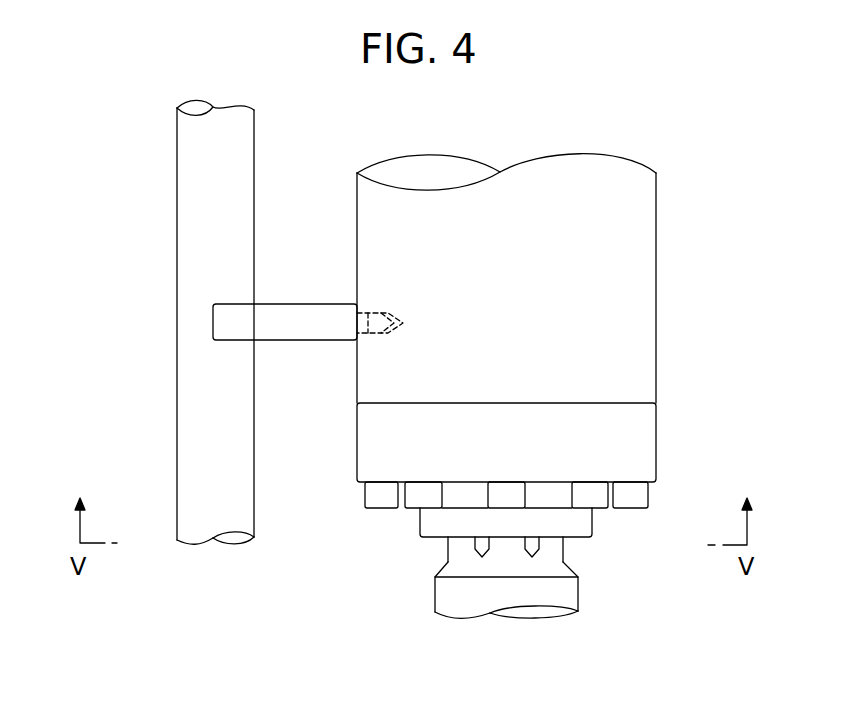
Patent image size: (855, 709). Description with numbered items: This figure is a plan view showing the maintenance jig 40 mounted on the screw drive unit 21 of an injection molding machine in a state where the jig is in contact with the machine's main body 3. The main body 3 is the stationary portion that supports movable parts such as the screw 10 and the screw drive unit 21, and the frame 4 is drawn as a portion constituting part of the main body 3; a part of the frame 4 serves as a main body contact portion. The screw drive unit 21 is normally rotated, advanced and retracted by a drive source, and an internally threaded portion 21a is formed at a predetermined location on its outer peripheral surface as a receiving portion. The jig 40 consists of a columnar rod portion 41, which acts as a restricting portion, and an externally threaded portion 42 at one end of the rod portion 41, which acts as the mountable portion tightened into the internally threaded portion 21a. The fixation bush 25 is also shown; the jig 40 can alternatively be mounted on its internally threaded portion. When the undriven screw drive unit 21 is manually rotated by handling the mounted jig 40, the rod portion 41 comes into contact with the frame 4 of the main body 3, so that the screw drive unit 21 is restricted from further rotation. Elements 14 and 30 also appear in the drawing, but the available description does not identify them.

The main body 3 is at (176, 226).
The frame 4 is at (208, 401).
The screw 10 is at (435, 588).
The neck portion 14 is at (563, 548).
The screw drive unit 21 is at (657, 291).
The internally threaded portion 21a is at (373, 334).
The fixation bush 25 is at (657, 440).
The terminals 30 is at (365, 495).
The maintenance jig 40 is at (270, 304).
The rod portion 41 is at (313, 304).
The externally threaded portion 42 is at (378, 318).